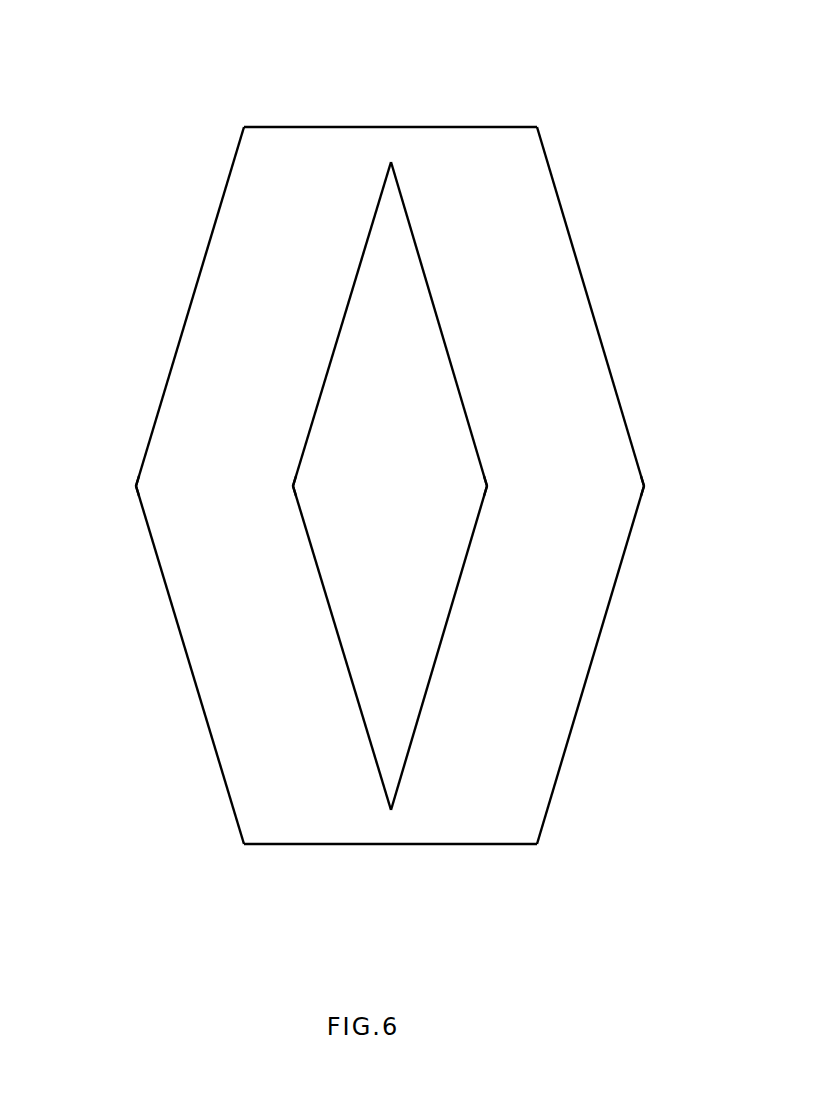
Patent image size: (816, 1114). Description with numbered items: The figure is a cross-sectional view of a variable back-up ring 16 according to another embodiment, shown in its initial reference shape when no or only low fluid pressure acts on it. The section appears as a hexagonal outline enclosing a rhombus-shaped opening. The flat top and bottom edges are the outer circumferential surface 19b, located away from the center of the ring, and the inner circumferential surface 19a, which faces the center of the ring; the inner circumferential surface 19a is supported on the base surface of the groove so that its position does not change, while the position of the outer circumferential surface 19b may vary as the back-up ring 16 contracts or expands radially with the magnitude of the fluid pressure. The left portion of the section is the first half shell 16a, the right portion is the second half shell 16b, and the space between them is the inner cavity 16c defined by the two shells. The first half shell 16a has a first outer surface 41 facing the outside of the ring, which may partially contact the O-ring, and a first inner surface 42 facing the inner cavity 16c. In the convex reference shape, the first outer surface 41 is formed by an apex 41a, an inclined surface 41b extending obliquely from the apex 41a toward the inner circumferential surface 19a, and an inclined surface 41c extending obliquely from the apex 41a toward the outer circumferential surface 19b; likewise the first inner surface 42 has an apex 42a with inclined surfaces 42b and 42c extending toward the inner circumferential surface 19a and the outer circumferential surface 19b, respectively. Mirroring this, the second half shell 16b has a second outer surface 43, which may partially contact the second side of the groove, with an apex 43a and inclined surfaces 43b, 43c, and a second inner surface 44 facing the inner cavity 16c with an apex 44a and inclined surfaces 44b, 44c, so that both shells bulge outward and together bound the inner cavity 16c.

The back-up ring 16 is at (385, 461).
The first half shell 16a is at (139, 485).
The second half shell 16b is at (636, 485).
The inner cavity 16c is at (497, 486).
The inner circumferential surface 19a is at (390, 844).
The outer circumferential surface 19b is at (390, 127).
The first outer surface 41 is at (139, 485).
The apex 41a is at (136, 486).
The inclined surface 41b is at (189, 665).
The inclined surface 41c is at (190, 305).
The first inner surface 42 is at (350, 486).
The apex 42a is at (295, 486).
The inclined surface 42b is at (312, 543).
The inclined surface 42c is at (316, 425).
The second outer surface 43 is at (636, 485).
The apex 43a is at (644, 486).
The inclined surface 43b is at (591, 665).
The inclined surface 43c is at (590, 303).
The second inner surface 44 is at (424, 486).
The apex 44a is at (486, 486).
The inclined surface 44b is at (433, 648).
The inclined surface 44c is at (452, 370).